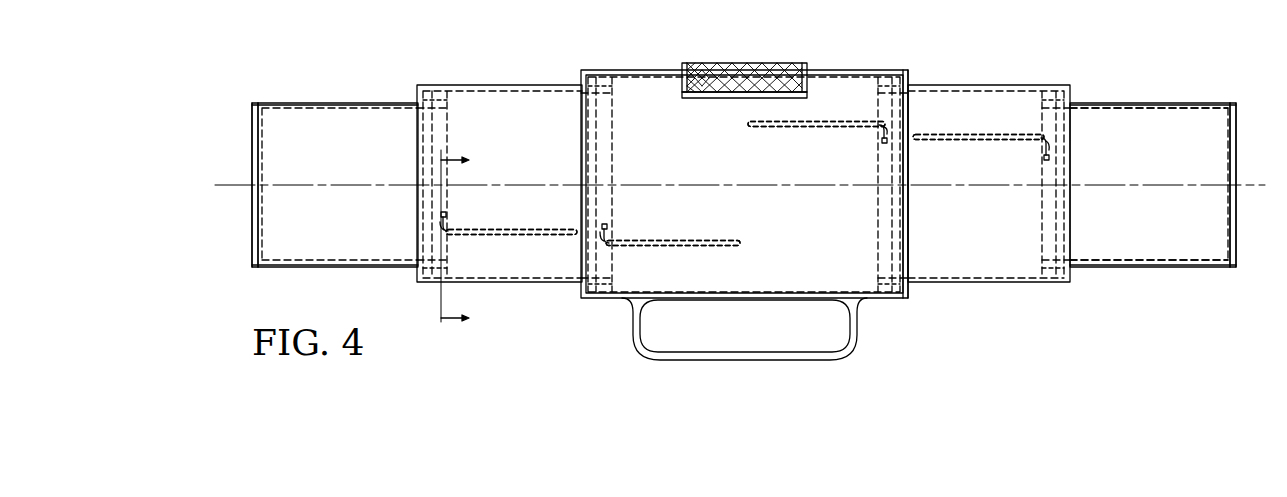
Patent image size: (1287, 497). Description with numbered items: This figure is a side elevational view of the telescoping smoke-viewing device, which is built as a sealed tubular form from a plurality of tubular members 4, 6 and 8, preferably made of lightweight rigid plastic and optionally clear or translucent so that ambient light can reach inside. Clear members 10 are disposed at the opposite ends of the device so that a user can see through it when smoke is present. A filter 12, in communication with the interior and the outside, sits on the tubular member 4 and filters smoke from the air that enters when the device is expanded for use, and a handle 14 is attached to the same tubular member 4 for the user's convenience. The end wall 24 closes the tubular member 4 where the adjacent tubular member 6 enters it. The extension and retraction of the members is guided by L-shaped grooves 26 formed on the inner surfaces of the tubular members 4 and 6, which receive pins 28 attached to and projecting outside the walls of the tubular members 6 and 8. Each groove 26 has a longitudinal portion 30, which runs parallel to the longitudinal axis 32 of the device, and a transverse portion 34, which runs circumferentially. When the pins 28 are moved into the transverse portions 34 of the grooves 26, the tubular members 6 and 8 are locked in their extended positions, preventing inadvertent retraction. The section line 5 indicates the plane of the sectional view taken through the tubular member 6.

The tubular member 4 is at (637, 82).
The section line 5- 5 is at (468, 239).
The tubular member 6 is at (484, 107).
The tubular member 8 is at (320, 125).
The clear members 10 is at (253, 210).
The filter 12 is at (746, 63).
The handle 14 is at (855, 340).
The body end wall 24 is at (908, 78).
The L-shaped grooves 26 is at (530, 234).
The pins 28 is at (447, 215).
The longitudinal portion 30 is at (535, 240).
The longitudinal axis 32 is at (1163, 187).
The transverse portion 34 is at (440, 222).